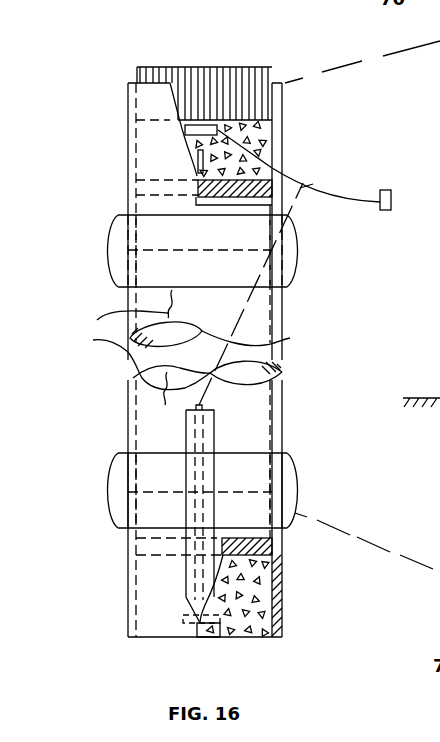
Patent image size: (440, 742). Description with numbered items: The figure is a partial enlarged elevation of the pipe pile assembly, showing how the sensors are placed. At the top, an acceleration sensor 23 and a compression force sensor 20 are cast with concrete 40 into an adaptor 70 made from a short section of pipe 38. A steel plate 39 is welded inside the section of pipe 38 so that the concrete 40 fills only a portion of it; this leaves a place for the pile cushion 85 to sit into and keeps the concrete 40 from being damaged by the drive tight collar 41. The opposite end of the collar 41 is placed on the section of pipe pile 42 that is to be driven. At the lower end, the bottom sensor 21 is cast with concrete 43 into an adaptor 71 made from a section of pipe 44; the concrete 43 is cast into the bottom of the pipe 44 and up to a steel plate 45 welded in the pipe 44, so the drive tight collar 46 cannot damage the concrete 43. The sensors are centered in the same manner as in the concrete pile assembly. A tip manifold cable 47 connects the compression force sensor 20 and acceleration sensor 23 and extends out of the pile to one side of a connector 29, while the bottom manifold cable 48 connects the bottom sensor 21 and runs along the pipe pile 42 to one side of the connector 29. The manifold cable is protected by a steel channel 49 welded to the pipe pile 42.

The pile cushion 85 is at (137, 67).
The adaptor 70 is at (128, 178).
The section of pipe 38 is at (137, 110).
The compression force sensor 20 is at (271, 128).
The concrete 40 is at (272, 140).
The acceleration sensor 23 is at (198, 160).
The steel plate 39 is at (272, 190).
The connector 29 is at (385, 190).
The tip manifold cable 47 is at (304, 192).
The drive tight collar 41 is at (300, 262).
The bottom manifold cable 48 is at (230, 302).
The section of pipe pile 42 is at (175, 363).
The steel channel 49 is at (215, 438).
The drive tight collar 46 is at (114, 462).
The section of pipe 44 is at (160, 593).
The steel plate 45 is at (272, 542).
The concrete 43 is at (253, 593).
The bottom sensor 21 is at (206, 626).
The adaptor 71 is at (127, 630).